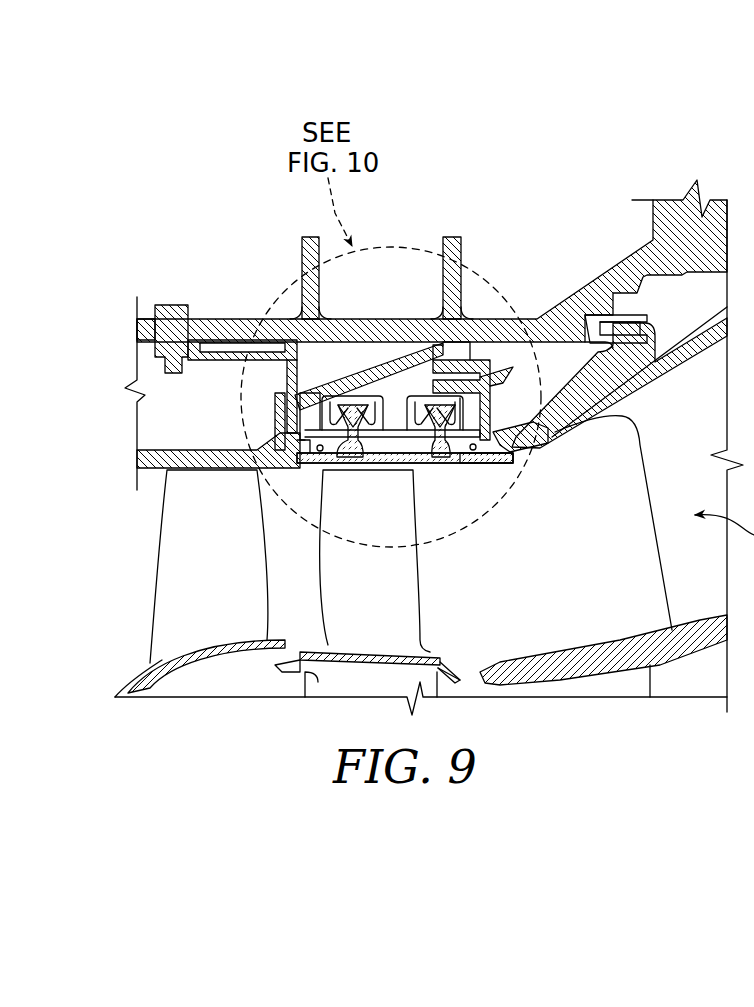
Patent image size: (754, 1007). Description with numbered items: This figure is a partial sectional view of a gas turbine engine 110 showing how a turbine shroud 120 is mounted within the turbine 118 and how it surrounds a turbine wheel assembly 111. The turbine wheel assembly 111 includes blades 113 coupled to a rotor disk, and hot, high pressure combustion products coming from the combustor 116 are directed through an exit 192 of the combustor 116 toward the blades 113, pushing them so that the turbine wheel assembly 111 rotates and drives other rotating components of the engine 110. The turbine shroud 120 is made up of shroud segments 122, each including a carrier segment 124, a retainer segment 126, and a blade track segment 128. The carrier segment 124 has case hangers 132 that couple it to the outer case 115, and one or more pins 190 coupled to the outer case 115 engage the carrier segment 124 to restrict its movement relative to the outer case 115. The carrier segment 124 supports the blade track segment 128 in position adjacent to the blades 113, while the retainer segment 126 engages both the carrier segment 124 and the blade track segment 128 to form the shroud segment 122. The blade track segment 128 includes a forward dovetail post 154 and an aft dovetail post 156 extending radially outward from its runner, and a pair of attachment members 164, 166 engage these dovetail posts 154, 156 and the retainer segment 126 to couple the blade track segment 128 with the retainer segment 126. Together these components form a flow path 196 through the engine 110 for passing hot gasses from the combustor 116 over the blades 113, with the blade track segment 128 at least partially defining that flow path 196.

The gas turbine engine 110 is at (658, 115).
The turbine wheel assembly 111 is at (443, 655).
The blades 113 is at (405, 560).
The outer case 115 is at (548, 298).
The combustor 116 is at (138, 298).
The turbine 118 is at (601, 262).
The turbine shroud 120 is at (498, 385).
The shroud segments 122 is at (517, 397).
The carrier segment 124 is at (285, 383).
The retainer segment 126 is at (496, 417).
The blade track segment 128 is at (481, 470).
The case hangers 132 is at (323, 322).
The forward dovetail post 154 is at (366, 428).
The aft dovetail post 156 is at (456, 428).
The attachment member 164 is at (372, 397).
The attachment member 166 is at (415, 397).
The pins 190 is at (172, 303).
The exit of the combustor 192 is at (200, 576).
The flow path 196 is at (366, 583).